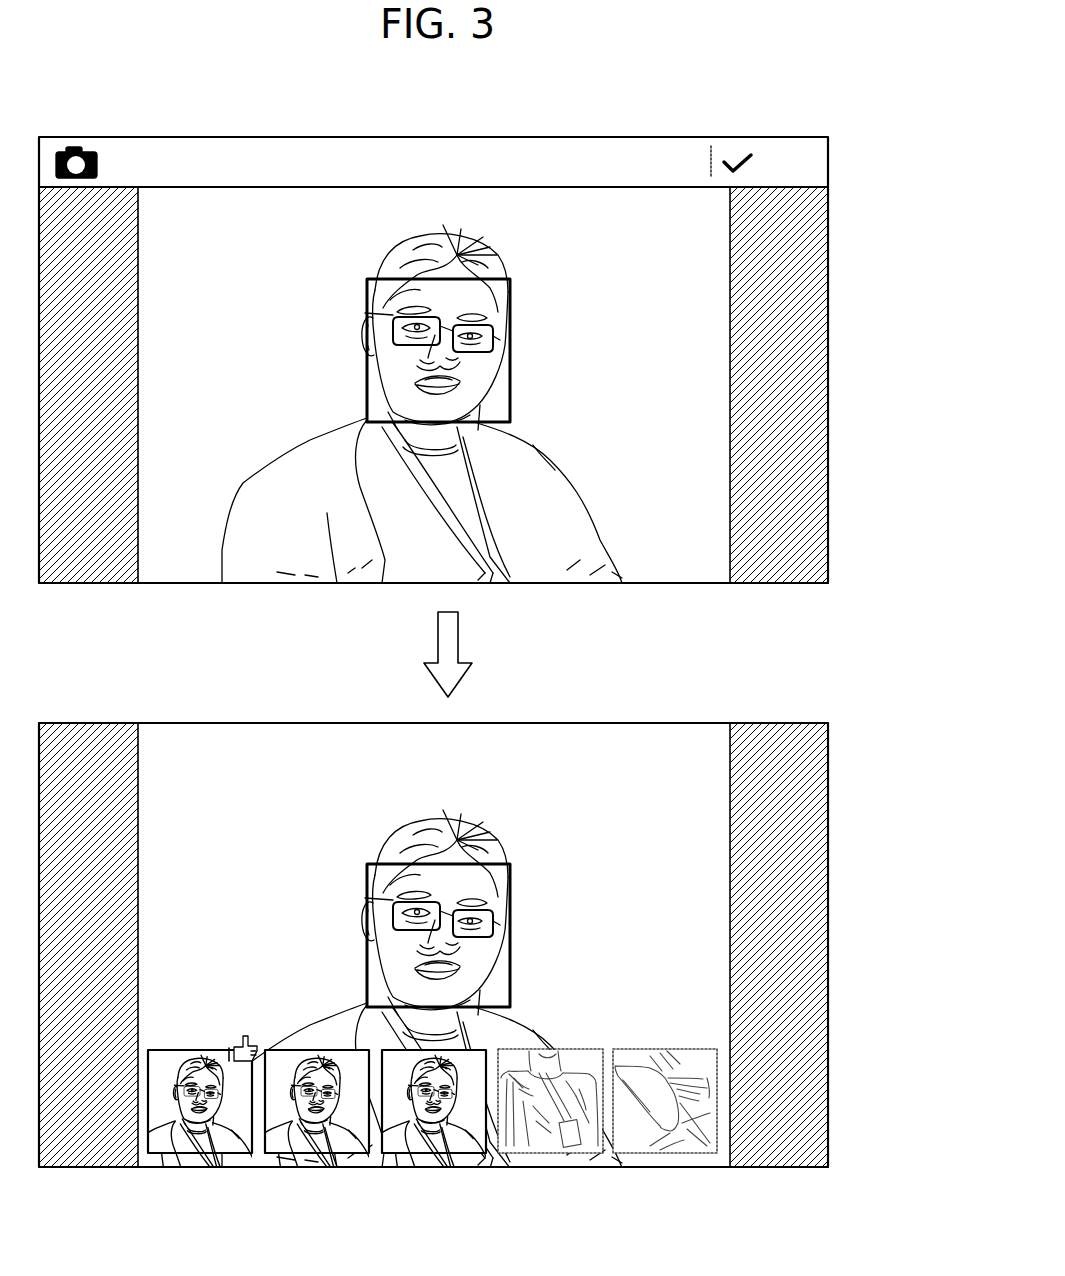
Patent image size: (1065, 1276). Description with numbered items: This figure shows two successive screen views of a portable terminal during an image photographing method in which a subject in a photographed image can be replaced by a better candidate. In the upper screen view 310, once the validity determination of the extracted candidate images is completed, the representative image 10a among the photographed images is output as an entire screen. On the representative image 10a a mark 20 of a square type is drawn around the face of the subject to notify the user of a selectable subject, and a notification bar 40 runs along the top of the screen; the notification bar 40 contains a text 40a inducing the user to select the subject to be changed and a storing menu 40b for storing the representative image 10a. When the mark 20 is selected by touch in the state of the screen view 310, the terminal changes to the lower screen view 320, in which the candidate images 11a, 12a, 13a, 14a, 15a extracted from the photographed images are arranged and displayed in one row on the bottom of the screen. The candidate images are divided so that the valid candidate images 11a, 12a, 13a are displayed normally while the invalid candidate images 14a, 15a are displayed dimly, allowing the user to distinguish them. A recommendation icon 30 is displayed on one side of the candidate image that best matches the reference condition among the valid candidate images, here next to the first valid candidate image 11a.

The screen view 310 is at (520, 138).
The screen view 320 is at (521, 724).
The notification bar 40 is at (792, 72).
The text 40a is at (692, 149).
The storing menu 40b is at (786, 149).
The representative image 10a is at (685, 584).
The mark 20 is at (383, 584).
The candidate image 11a is at (163, 1158).
The candidate image 12a is at (280, 1158).
The candidate image 13a is at (398, 1158).
The candidate image 14a is at (518, 1148).
The candidate image 15a is at (636, 1148).
The recommendation icon 30 is at (248, 1063).